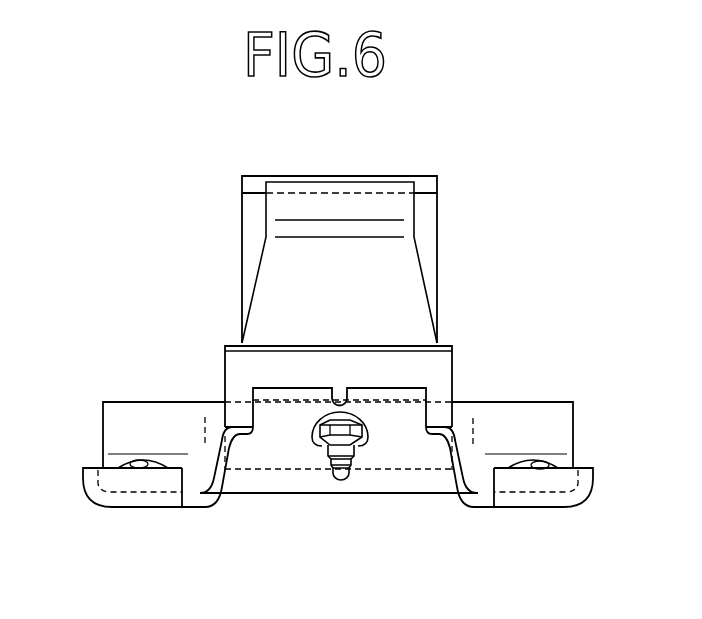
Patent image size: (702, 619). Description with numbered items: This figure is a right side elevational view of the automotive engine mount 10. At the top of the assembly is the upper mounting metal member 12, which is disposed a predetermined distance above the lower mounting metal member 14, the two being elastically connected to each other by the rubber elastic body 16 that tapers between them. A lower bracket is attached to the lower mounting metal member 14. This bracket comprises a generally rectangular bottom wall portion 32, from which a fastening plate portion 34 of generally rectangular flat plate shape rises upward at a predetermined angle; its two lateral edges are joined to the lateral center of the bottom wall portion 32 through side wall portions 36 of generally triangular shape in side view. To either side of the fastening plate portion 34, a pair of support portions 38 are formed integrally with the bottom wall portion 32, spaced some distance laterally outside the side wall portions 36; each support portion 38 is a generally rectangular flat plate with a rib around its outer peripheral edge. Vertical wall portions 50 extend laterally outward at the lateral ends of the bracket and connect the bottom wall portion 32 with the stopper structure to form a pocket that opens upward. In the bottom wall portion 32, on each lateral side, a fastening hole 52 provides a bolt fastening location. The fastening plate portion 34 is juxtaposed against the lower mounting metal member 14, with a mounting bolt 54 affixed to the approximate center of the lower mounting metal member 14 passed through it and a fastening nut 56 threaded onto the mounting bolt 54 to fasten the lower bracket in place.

The engine mount 10 is at (416, 139).
The upper mounting metal member 12 is at (256, 227).
The lower mounting metal member 14 is at (438, 372).
The rubber elastic body 16 is at (393, 302).
The bottom wall portion 32 is at (276, 482).
The fastening plate portion 34 is at (393, 440).
The side wall portion 36 is at (220, 477).
The support portion 38 is at (128, 498).
The vertical wall portion 50 is at (118, 428).
The fastening hole 52 is at (136, 460).
The mounting bolt 54 is at (340, 480).
The fastening nut 56 is at (322, 455).